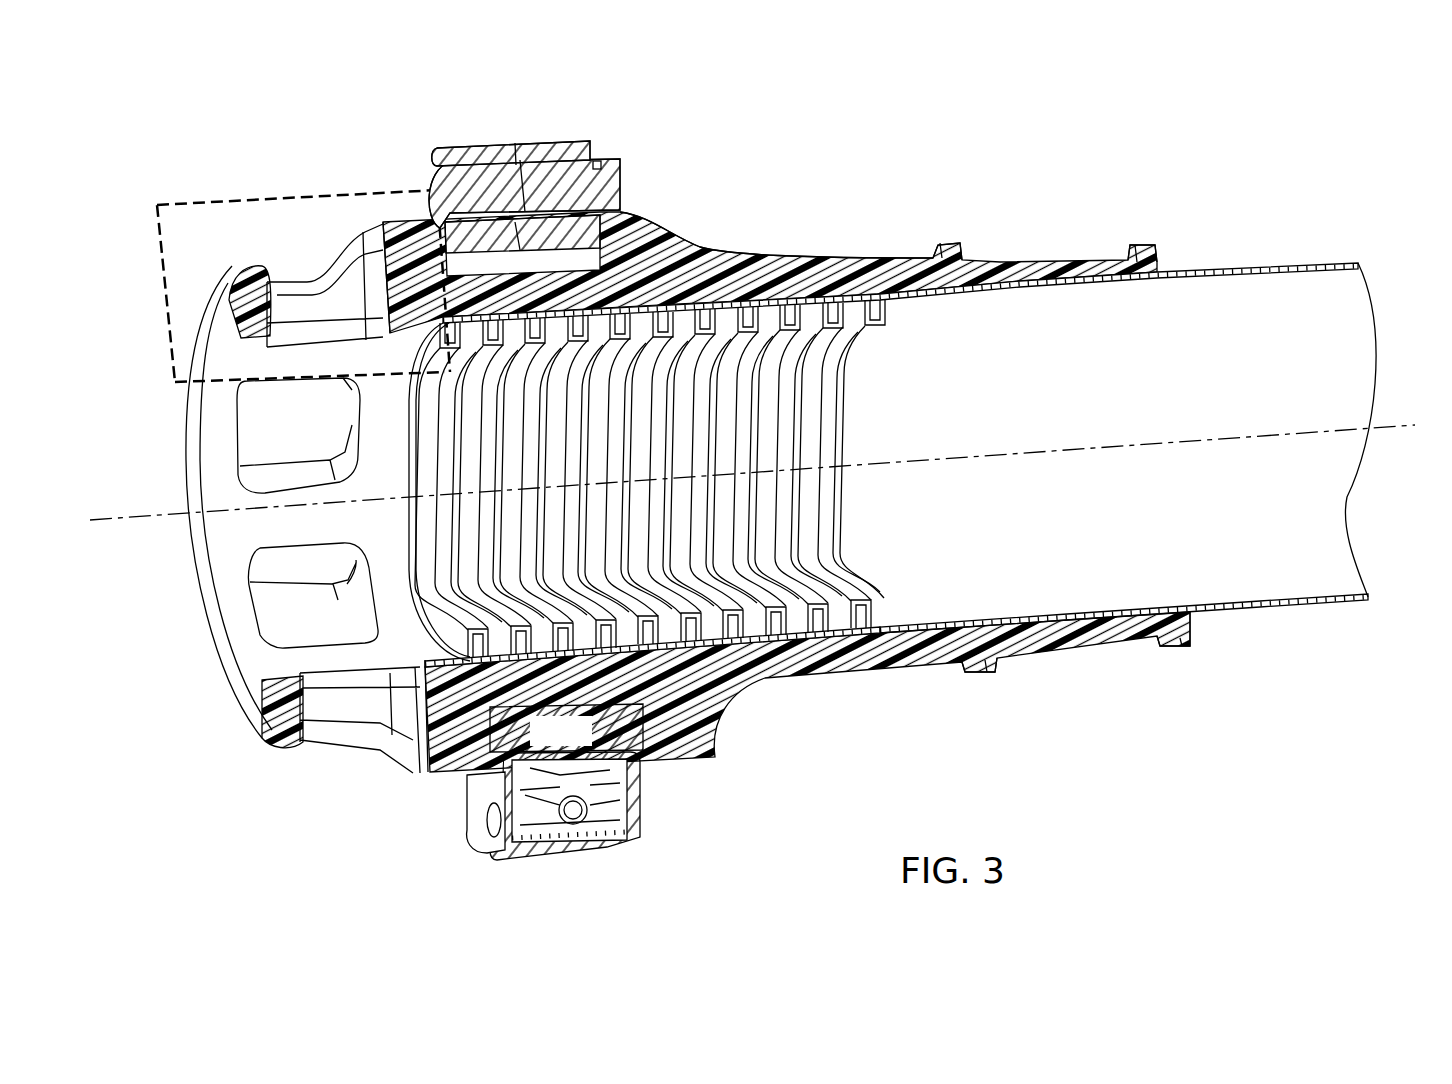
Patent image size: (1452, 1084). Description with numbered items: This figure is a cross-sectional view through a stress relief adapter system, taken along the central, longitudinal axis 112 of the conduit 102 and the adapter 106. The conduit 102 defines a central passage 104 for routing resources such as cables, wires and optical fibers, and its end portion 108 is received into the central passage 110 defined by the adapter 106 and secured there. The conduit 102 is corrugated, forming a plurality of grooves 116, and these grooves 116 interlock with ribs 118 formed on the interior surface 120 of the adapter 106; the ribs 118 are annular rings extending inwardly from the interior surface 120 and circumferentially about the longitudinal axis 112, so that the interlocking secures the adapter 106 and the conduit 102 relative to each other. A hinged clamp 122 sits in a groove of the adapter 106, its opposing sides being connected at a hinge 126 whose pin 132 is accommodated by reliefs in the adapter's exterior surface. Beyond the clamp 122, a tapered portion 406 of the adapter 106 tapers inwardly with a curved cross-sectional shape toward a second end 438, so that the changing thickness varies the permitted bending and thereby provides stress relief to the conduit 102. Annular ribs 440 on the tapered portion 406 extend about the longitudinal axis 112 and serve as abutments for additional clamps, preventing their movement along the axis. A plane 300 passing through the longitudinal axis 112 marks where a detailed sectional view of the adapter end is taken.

The conduit 102 is at (1218, 263).
The central passage 104 is at (1172, 374).
The adapter 106 is at (700, 245).
The end portion 108 is at (1075, 636).
The central passage 110 is at (290, 518).
The longitudinal axis 112 is at (1415, 425).
The grooves 116 is at (863, 630).
The ribs 118 is at (600, 655).
The interior surface 120 is at (407, 592).
The clamp 122 is at (528, 860).
The hinge 126 is at (500, 142).
The pin 132 is at (600, 165).
The plane 300 is at (247, 205).
The tapered portion 406 is at (755, 278).
The second end 438 is at (1185, 646).
The ribs 440 is at (948, 243).